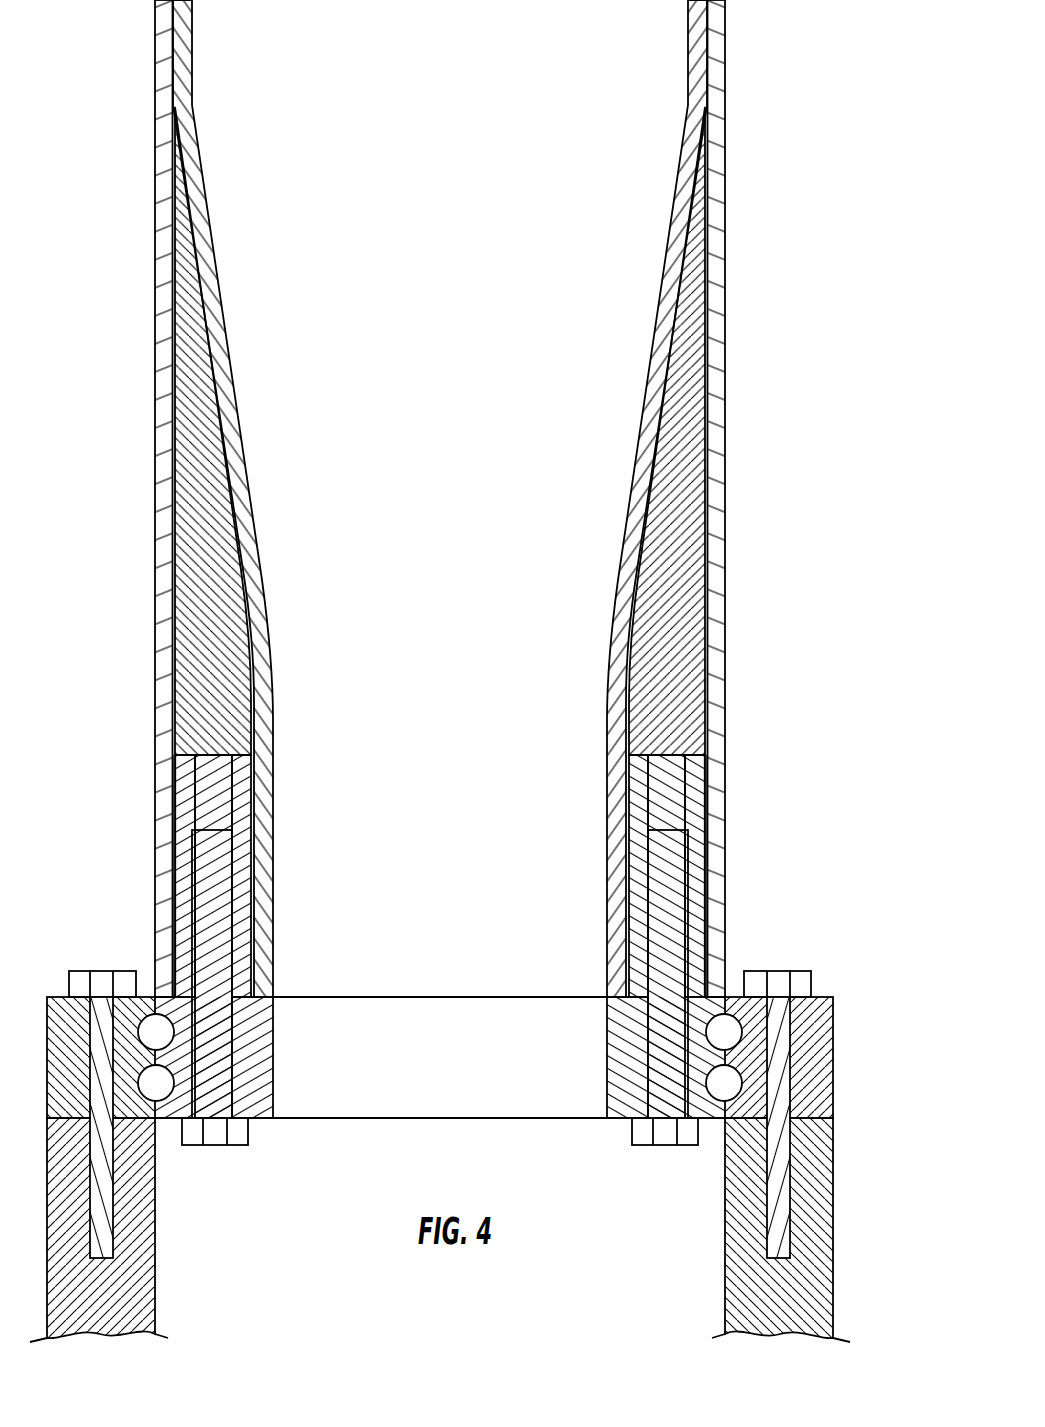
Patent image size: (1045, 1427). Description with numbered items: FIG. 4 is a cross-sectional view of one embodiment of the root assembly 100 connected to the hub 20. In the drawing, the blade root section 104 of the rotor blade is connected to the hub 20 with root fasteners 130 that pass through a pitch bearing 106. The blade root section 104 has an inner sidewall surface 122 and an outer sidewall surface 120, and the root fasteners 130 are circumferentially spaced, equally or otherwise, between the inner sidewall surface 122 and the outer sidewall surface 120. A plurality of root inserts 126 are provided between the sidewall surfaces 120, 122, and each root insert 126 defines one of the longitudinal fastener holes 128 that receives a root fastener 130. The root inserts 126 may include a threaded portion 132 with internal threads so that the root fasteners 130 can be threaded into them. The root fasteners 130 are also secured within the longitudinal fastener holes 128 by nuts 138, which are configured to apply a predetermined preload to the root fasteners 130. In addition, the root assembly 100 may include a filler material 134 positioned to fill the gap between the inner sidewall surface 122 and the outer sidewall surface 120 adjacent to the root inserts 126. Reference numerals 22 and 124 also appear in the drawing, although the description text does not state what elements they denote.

The hub 20 is at (838, 1246).
The tower 22 is at (453, 498).
The root assembly 100 is at (489, 671).
The blade root section 104 is at (158, 534).
The pitch bearing 106 is at (838, 1068).
The outer sidewall surface 120 is at (170, 661).
The inner sidewall surface 122 is at (268, 710).
The base plate 124 is at (245, 1003).
The root insert 126 is at (178, 758).
The longitudinal fastener hole 128 is at (193, 858).
The root fastener 130 is at (213, 890).
The threaded portion 132 is at (188, 798).
The filler material 134 is at (234, 602).
The nut 138 is at (235, 1138).